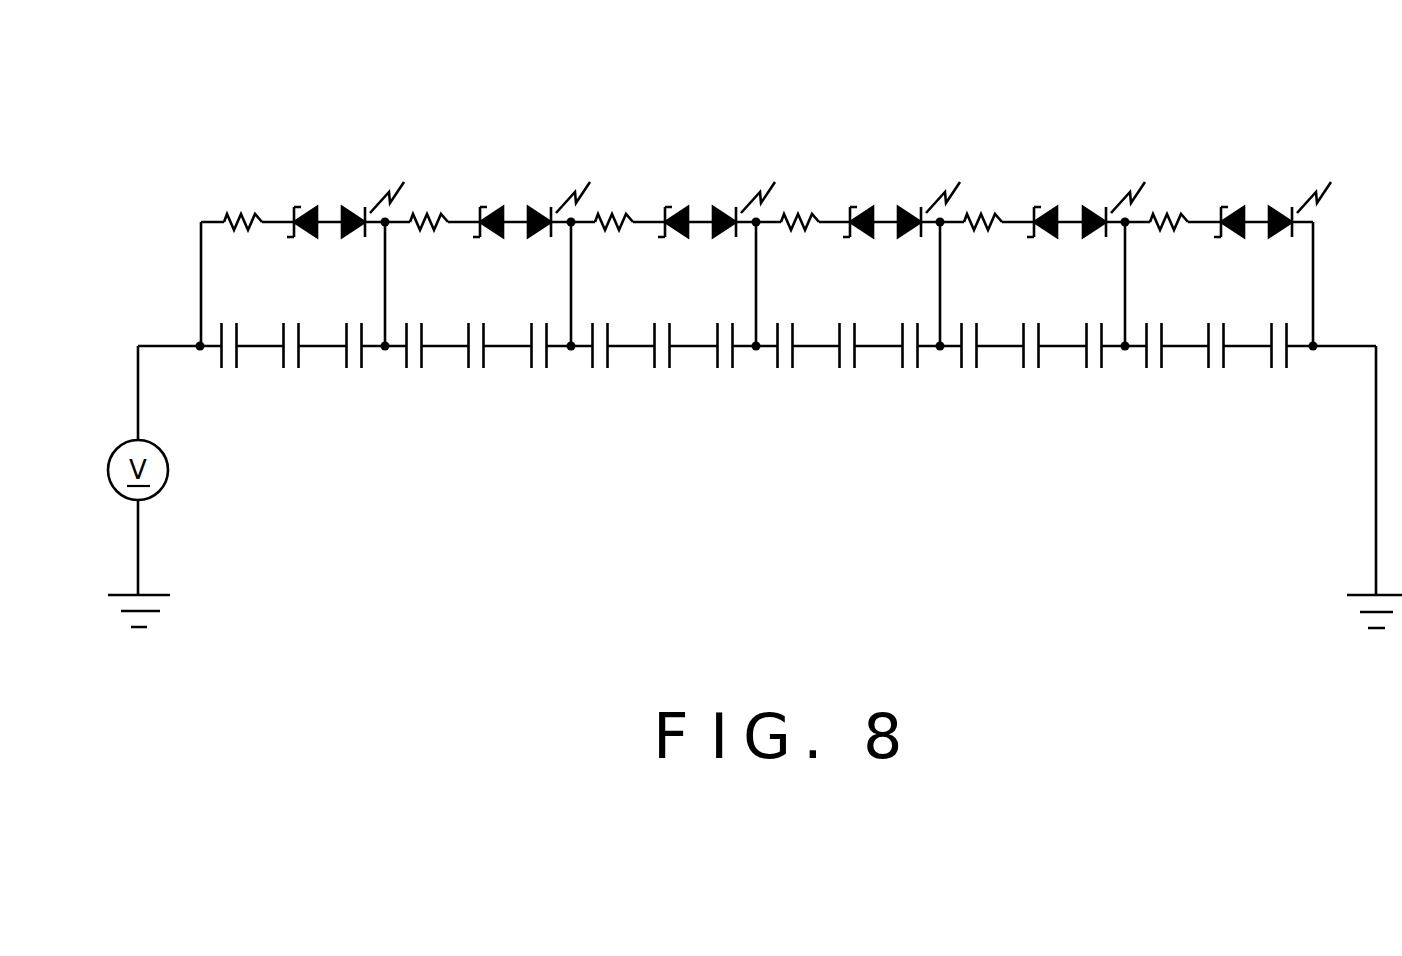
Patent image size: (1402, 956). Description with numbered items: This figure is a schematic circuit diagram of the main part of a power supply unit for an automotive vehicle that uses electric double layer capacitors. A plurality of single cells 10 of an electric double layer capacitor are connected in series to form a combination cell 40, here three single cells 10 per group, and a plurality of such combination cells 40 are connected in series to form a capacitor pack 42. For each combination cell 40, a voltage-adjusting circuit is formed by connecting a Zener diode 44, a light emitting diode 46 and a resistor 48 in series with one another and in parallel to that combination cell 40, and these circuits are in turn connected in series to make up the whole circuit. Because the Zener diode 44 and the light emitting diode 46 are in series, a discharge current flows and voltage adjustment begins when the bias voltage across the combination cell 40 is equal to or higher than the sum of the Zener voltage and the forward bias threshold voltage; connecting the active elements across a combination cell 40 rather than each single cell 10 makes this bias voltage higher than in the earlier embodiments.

The single cell 10 is at (239, 362).
The combination cell 40 is at (230, 462).
The capacitor pack 42 is at (285, 565).
The Zener diode 44 is at (305, 212).
The light emitting diode 46 is at (352, 210).
The resistor 48 is at (250, 210).